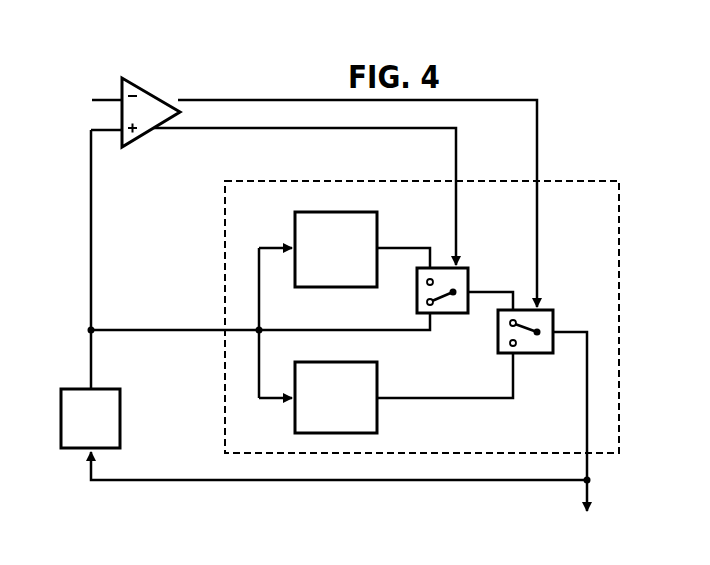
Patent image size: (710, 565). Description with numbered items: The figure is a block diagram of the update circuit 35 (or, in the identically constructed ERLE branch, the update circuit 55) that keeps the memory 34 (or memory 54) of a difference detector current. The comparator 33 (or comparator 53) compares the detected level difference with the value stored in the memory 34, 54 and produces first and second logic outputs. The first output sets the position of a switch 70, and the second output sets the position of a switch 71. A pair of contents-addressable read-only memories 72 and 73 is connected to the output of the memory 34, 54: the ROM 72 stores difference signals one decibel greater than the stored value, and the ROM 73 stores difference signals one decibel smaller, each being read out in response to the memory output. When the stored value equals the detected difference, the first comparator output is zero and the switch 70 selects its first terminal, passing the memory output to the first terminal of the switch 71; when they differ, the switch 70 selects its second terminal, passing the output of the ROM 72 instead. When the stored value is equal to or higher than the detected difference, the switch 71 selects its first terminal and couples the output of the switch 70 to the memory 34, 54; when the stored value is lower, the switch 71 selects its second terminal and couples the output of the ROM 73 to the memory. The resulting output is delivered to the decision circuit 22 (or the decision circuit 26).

The comparator 33 is at (145, 102).
The comparator 53 is at (141, 87).
The memory 34 is at (115, 400).
The memory 54 is at (106, 389).
The update circuit 35 is at (416, 301).
The update circuit 55 is at (416, 301).
The switch 70 is at (468, 278).
The switch 71 is at (553, 318).
The read-only memory 72 is at (378, 231).
The read-only memory 73 is at (378, 391).
The decision circuit 22 is at (600, 448).
The decision circuit 26 is at (600, 448).